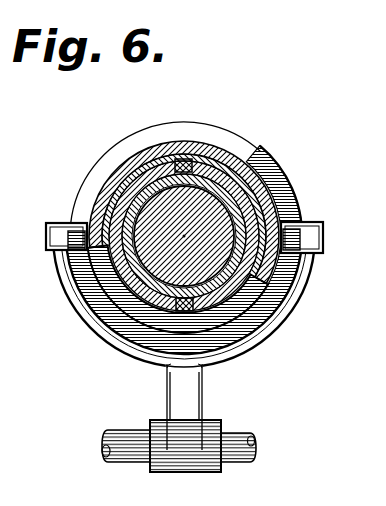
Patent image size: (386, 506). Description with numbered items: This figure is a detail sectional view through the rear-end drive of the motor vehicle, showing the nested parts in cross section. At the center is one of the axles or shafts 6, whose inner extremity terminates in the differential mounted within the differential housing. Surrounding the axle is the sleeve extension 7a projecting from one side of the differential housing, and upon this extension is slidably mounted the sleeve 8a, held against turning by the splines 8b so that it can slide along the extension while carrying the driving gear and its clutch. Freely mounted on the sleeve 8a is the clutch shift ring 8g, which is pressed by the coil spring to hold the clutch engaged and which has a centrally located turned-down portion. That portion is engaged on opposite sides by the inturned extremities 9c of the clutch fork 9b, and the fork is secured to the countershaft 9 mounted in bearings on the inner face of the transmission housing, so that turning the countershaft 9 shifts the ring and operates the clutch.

The axle 6 is at (221, 207).
The sleeve extension 7a is at (148, 185).
The sleeve 8a is at (214, 165).
The spline 8b is at (186, 162).
The clutch shift ring 8g is at (262, 302).
The countershaft 9 is at (128, 449).
The clutch fork 9b is at (200, 396).
The inturned extremities 9c is at (293, 231).